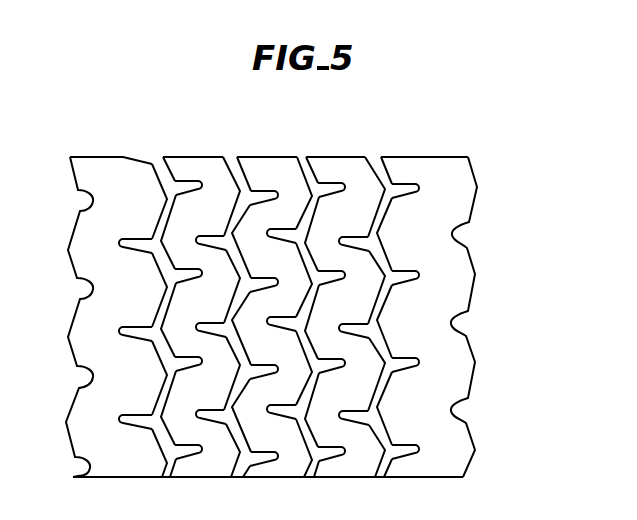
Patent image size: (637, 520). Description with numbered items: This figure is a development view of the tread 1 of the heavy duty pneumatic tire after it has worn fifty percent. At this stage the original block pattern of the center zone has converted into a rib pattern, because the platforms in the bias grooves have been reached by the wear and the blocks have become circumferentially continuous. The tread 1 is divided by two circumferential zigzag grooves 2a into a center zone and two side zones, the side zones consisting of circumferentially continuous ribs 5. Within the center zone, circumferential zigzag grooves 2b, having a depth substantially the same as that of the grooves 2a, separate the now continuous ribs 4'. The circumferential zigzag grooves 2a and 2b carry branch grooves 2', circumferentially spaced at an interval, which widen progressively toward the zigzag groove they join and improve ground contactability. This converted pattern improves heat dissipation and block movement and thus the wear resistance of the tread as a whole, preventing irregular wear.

The tread 1 is at (480, 270).
The circumferentially continuous ribs 5 is at (465, 198).
The circumferential zigzag grooves 2a is at (165, 164).
The circumferential zigzag grooves 2b is at (243, 167).
The branch grooves 2' is at (296, 285).
The ribs 4' is at (352, 132).